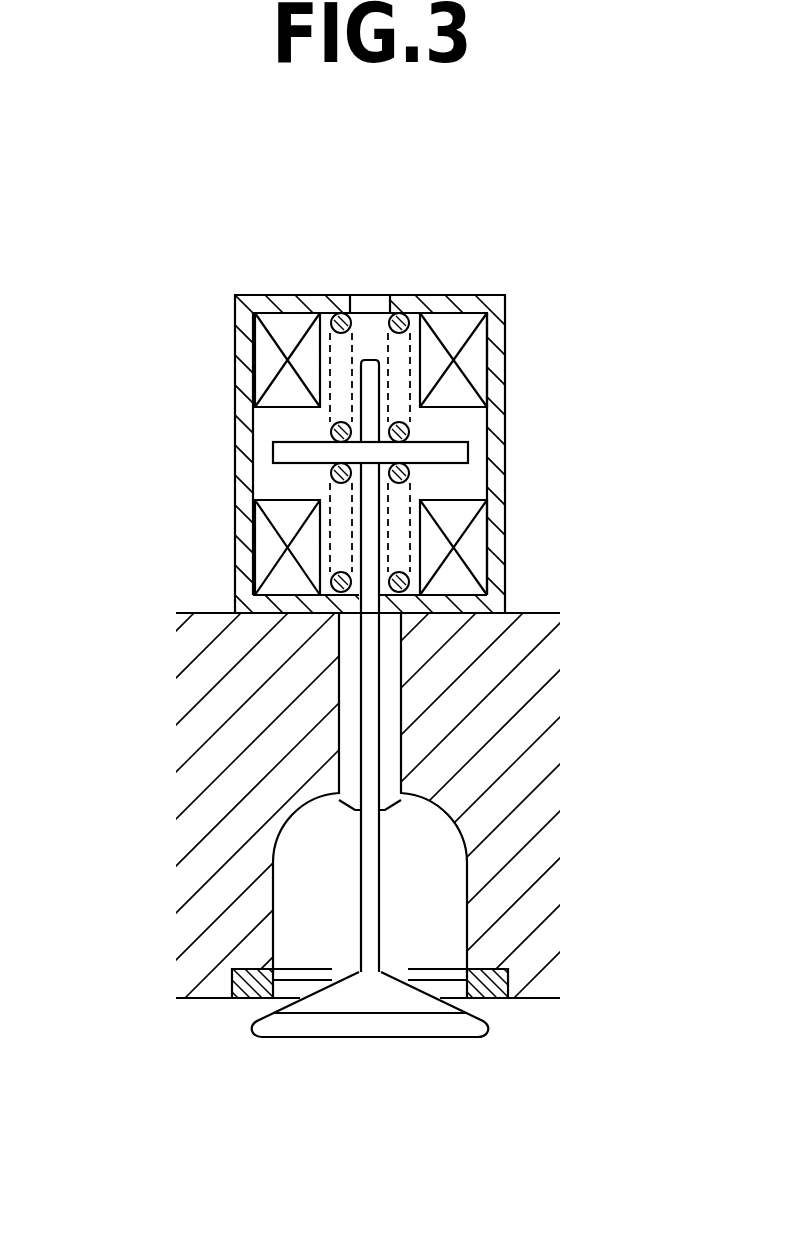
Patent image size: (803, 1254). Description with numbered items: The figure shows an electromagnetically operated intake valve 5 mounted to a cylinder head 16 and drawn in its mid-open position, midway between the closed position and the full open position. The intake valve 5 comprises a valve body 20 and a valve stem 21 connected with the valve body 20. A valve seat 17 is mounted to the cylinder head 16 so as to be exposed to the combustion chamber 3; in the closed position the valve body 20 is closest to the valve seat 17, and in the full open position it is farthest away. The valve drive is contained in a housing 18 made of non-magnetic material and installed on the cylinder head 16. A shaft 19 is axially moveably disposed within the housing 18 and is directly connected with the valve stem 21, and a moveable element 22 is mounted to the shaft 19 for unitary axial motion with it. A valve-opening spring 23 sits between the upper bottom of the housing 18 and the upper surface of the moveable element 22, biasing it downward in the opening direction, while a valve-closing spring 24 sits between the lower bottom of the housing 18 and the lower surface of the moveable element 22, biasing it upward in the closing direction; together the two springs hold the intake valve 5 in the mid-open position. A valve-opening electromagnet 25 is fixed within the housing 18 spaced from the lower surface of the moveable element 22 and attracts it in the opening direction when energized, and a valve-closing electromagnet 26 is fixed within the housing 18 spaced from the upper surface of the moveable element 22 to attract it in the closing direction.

The combustion chamber 3 is at (363, 727).
The electromagnetically operated intake valve 5 is at (401, 378).
The cylinder head 16 is at (505, 740).
The valve seat 17 is at (505, 980).
The housing 18 is at (505, 550).
The shaft 19 is at (375, 385).
The valve body 20 is at (480, 1025).
The valve stem 21 is at (380, 876).
The moveable element 22 is at (468, 451).
The valve-opening spring 23 is at (330, 415).
The valve-closing spring 24 is at (330, 488).
The valve-opening electromagnet 25 is at (270, 547).
The valve-closing electromagnet 26 is at (272, 360).